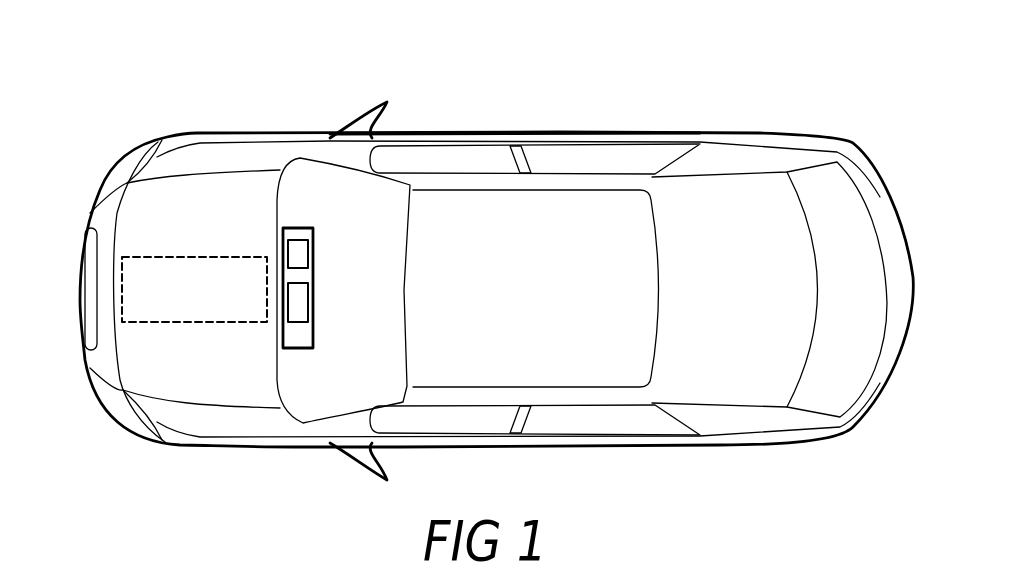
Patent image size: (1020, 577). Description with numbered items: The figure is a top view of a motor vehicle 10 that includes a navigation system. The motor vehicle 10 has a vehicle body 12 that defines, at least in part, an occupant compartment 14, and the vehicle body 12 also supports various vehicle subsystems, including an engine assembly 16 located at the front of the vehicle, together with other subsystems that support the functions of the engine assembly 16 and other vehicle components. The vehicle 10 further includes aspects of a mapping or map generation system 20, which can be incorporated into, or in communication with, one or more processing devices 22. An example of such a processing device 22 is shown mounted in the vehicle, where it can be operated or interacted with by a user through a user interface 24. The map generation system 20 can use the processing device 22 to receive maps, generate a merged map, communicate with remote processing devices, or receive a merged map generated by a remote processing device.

The motor vehicle 10 is at (168, 84).
The vehicle body 12 is at (509, 126).
The occupant compartment 14 is at (567, 373).
The engine assembly 16 is at (145, 257).
The map generation system 20 is at (317, 192).
The processing device 22 is at (300, 253).
The user interface 24 is at (300, 305).